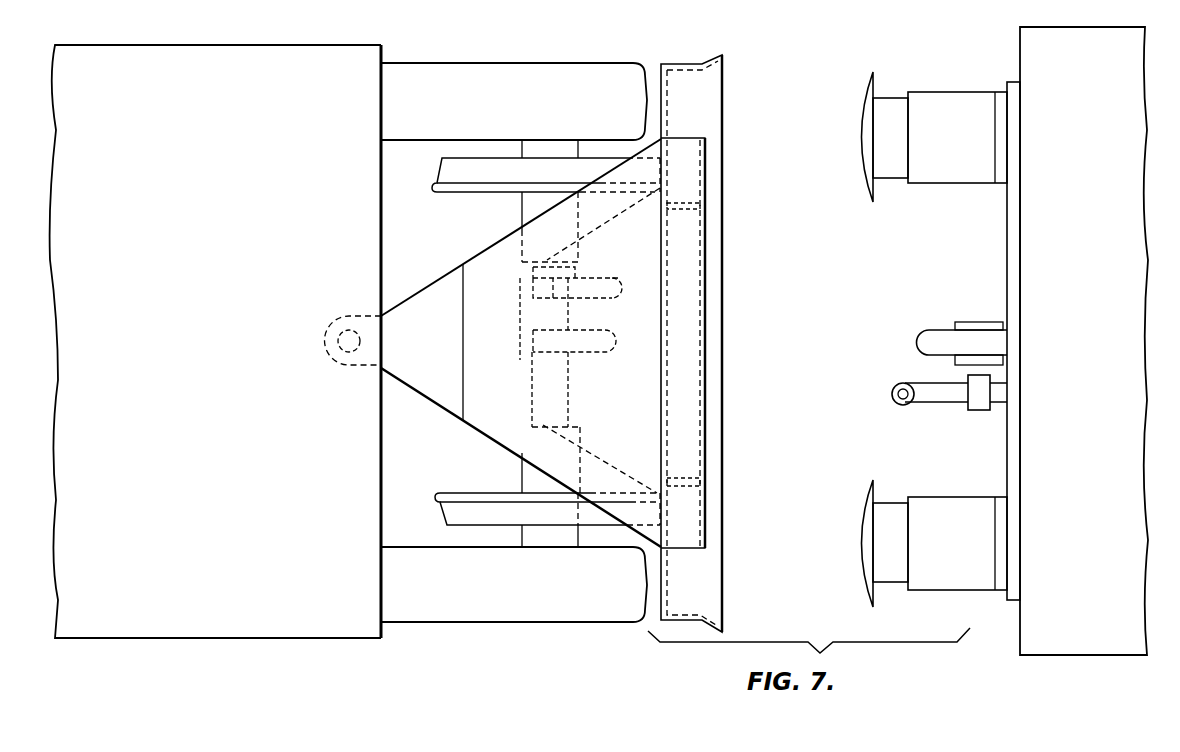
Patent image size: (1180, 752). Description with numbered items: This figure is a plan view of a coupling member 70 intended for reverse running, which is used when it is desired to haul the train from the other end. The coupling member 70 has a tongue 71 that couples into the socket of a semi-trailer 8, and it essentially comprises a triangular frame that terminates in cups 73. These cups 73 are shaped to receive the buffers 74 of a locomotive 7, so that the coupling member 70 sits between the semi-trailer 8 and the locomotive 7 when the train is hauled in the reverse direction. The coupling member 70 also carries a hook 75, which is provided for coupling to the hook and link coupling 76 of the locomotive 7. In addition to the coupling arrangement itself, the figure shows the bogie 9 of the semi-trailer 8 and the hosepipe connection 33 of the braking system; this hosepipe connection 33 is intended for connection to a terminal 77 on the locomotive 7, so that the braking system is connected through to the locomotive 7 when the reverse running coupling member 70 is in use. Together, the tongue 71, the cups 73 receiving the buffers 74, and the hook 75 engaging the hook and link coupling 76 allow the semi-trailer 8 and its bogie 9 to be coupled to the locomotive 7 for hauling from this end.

The locomotive 7 is at (1092, 640).
The semi-trailer 8 is at (315, 607).
The bogie 9 is at (495, 597).
The hosepipe connection 33 is at (604, 280).
The coupling member 70 is at (475, 251).
The tongue 71 is at (393, 362).
The cups 73 is at (705, 102).
The buffers 74 is at (862, 128).
The hook 75 is at (594, 352).
The hook and link coupling 76 is at (950, 336).
The terminal 77 is at (932, 395).